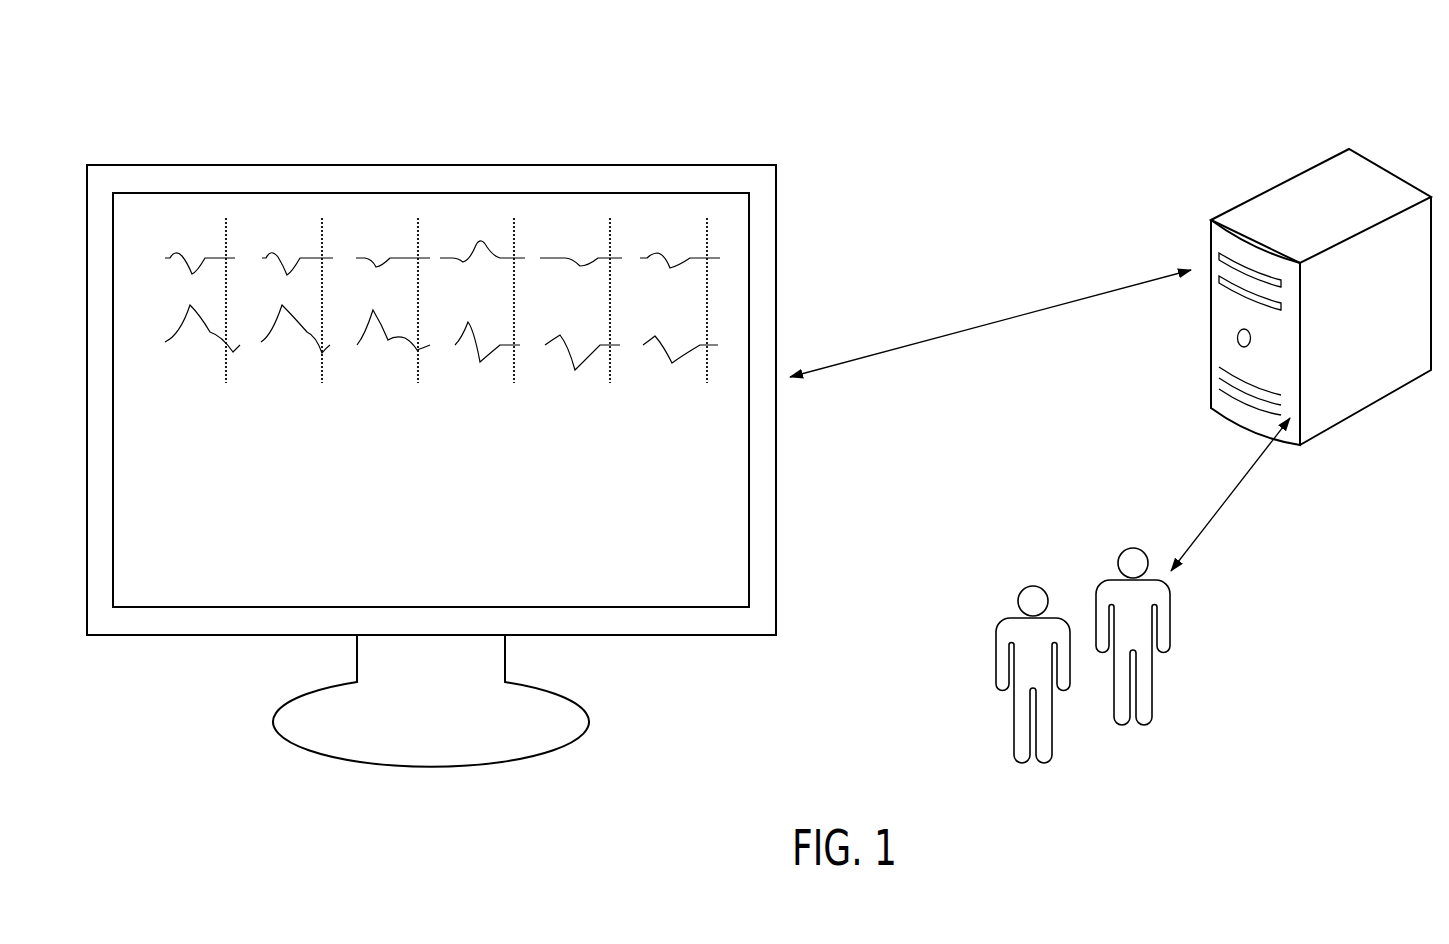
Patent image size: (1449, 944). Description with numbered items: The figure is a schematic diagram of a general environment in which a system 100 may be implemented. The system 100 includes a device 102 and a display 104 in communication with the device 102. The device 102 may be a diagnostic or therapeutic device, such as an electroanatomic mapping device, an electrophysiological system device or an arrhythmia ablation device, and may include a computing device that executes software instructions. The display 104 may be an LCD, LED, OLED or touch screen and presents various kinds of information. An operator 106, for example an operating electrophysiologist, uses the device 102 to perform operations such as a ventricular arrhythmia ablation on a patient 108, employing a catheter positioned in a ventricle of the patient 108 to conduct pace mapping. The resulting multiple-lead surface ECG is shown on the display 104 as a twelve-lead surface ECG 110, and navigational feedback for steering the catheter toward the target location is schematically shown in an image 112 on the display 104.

The system 100 is at (303, 113).
The device 102 is at (1285, 183).
The display 104 is at (593, 164).
The operator 106 is at (1169, 645).
The patient 108 is at (1033, 586).
The 12-lead surface ECG 110 is at (720, 304).
The image 112 is at (700, 538).